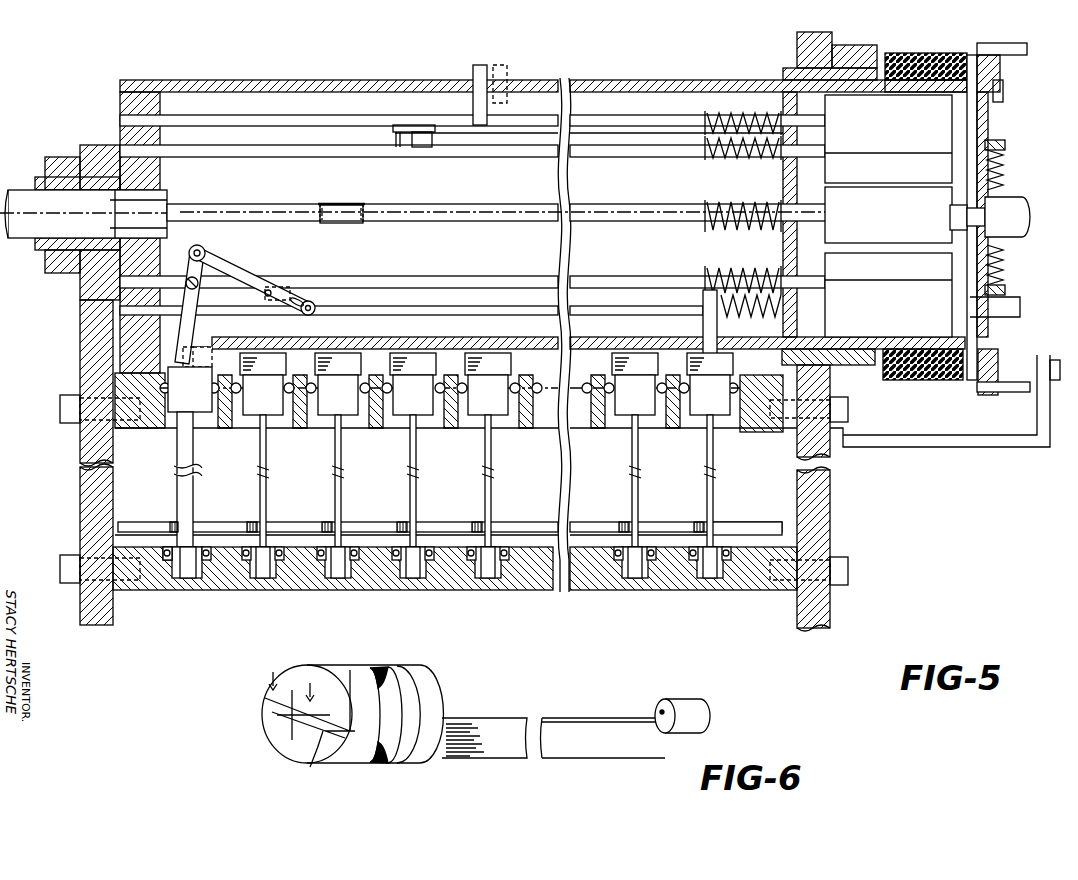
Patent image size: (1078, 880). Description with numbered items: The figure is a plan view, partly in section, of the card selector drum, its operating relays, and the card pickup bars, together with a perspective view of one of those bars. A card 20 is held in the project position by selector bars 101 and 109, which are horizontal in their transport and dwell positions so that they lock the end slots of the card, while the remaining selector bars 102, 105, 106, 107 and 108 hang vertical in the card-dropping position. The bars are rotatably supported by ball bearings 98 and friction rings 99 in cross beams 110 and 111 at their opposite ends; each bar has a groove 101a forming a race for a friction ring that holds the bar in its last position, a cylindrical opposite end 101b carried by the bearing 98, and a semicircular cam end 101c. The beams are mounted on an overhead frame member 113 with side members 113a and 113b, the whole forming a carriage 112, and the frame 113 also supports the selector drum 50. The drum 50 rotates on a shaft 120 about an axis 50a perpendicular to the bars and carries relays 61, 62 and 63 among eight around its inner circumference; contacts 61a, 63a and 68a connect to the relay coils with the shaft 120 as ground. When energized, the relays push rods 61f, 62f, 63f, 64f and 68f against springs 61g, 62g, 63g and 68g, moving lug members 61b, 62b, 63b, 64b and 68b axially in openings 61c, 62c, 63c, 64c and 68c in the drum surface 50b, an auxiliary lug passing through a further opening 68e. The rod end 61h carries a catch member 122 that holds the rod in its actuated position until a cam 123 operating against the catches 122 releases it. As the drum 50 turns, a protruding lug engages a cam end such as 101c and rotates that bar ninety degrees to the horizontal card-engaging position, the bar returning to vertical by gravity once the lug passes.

In FIG. 5, the card 20 is at (312, 514).
In FIG. 5, the selector drum 50 is at (196, 72).
In FIG. 5, the axis 50a is at (10, 196).
In FIG. 5, the surface of drum 50b is at (632, 82).
In FIG. 5, the relay 61 is at (910, 304).
In FIG. 5, the contact 61a is at (917, 382).
In FIG. 5, the lug member 61b is at (266, 286).
In FIG. 5, the opening 61c is at (292, 286).
In FIG. 5, the rod 61f is at (614, 276).
In FIG. 5, the spring 61g is at (736, 274).
In FIG. 5, the opposite end of rod 61h is at (1001, 312).
In FIG. 5, the relay 62 is at (902, 234).
In FIG. 5, the lug member 62b is at (332, 204).
In FIG. 5, the opening 62c is at (348, 206).
In FIG. 5, the rod 62f is at (612, 210).
In FIG. 5, the spring 62g is at (746, 204).
In FIG. 5, the relay 63 is at (902, 141).
In FIG. 5, the contact 63a is at (930, 58).
In FIG. 5, the lug member 63b is at (410, 130).
In FIG. 5, the opening 63c is at (420, 148).
In FIG. 5, the rod 63f is at (612, 154).
In FIG. 5, the spring 63g is at (712, 158).
In FIG. 5, the lug member 64b is at (474, 68).
In FIG. 5, the opening 64c is at (508, 86).
In FIG. 5, the rod 64f is at (630, 122).
In FIG. 5, the contact 68a is at (176, 360).
In FIG. 5, the lug member 68b is at (734, 384).
In FIG. 5, the opening 68c is at (698, 338).
In FIG. 5, the opening 68e is at (214, 350).
In FIG. 5, the rod 68f is at (422, 314).
In FIG. 5, the spring 68g is at (783, 308).
In FIG. 5, the ball bearing 98 is at (169, 561).
In FIG. 5, the friction ring 99 is at (144, 428).
In FIG. 5, the selector bar 101 is at (708, 500).
In FIG. 6, the selector bar 101 is at (502, 722).
In FIG. 6, the groove 101a is at (400, 682).
In FIG. 6, the opposite end of bar 101b is at (690, 704).
In FIG. 6, the cam end 101c is at (318, 757).
In FIG. 5, the selector bar 102 is at (636, 466).
In FIG. 5, the selector bar 105 is at (494, 480).
In FIG. 5, the selector bar 106 is at (416, 486).
In FIG. 5, the selector bar 107 is at (344, 478).
In FIG. 5, the selector bar 108 is at (268, 472).
In FIG. 5, the selector bar 109 is at (192, 511).
In FIG. 5, the cross beam 110 is at (138, 592).
In FIG. 5, the cross beam 111 is at (108, 427).
In FIG. 5, the carriage 112 is at (840, 620).
In FIG. 5, the overhead frame member 113 is at (798, 508).
In FIG. 5, the side member 113a is at (825, 520).
In FIG. 5, the side member 113b is at (80, 500).
In FIG. 5, the shaft 120 is at (1018, 202).
In FIG. 5, the catch member 122 is at (982, 394).
In FIG. 5, the cam 123 is at (1022, 398).